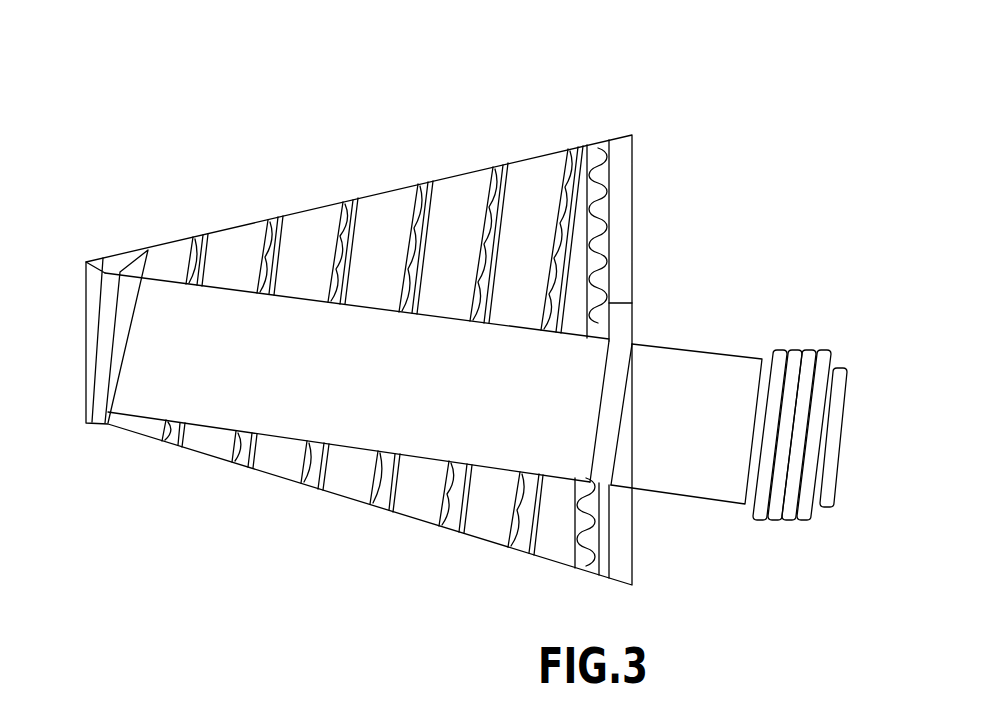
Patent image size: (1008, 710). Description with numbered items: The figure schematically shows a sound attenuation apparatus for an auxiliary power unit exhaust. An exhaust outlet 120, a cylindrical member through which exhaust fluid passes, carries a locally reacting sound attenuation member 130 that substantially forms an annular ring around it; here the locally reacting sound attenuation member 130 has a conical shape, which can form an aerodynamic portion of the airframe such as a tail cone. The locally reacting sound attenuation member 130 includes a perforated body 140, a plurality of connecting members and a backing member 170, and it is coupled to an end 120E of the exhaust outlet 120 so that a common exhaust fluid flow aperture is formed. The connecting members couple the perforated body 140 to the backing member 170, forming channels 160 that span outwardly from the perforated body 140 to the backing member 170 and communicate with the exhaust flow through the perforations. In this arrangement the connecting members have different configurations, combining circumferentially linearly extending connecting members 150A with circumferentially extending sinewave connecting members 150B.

The exhaust outlet 120 is at (476, 371).
The end of the exhaust outlet 120E is at (612, 333).
The locally reacting sound attenuation member 130 is at (339, 338).
The perforated body 140 is at (240, 292).
The circumferentially linearly extending connecting members 150A is at (493, 202).
The circumferentially extending sinewave connecting members 150B is at (418, 205).
The channels 160 is at (247, 243).
The backing member 170 is at (528, 158).